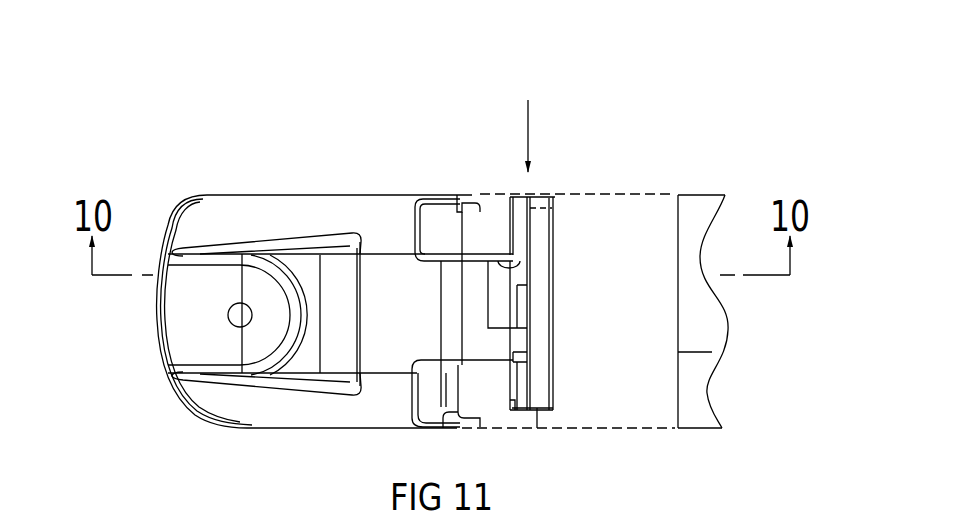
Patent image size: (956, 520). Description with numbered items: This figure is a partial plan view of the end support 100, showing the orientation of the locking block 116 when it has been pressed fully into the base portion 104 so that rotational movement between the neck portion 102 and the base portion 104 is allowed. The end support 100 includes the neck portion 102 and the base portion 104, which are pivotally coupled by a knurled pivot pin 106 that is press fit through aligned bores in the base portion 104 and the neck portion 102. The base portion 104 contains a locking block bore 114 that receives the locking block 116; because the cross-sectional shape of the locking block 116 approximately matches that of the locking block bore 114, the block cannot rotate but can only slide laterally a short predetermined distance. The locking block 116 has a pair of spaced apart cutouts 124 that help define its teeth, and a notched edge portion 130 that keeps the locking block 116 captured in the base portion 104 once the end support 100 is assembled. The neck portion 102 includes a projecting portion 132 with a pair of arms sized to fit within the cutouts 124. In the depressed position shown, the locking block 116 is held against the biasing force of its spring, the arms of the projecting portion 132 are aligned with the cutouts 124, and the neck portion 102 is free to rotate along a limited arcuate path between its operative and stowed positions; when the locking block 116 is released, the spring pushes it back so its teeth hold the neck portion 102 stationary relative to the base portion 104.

The end support 100 is at (495, 88).
The neck portion 102 is at (203, 162).
The base portion 104 is at (607, 164).
The knurled pivot pin 106 is at (447, 408).
The locking block bore 114 is at (537, 410).
The locking block 116 is at (542, 196).
The cutouts 124 is at (482, 310).
The notched edge portion 130 is at (508, 405).
The projecting portion 132 is at (464, 305).